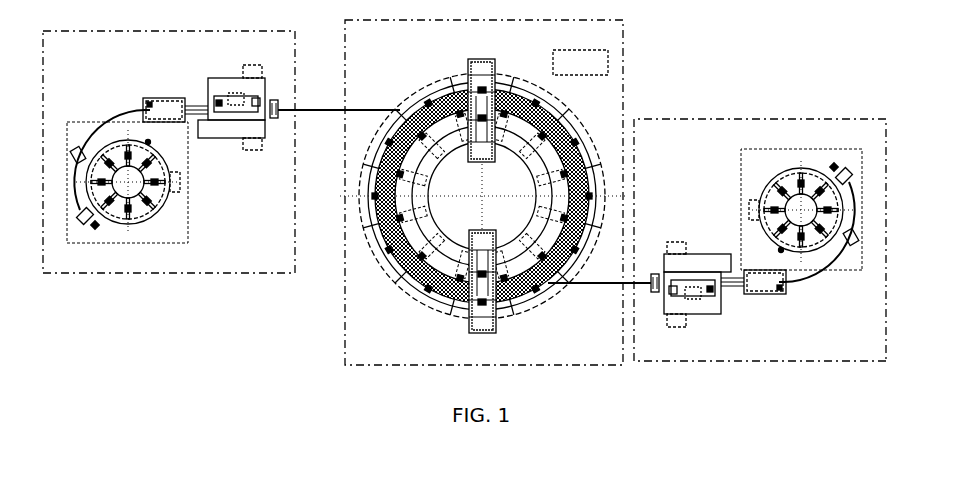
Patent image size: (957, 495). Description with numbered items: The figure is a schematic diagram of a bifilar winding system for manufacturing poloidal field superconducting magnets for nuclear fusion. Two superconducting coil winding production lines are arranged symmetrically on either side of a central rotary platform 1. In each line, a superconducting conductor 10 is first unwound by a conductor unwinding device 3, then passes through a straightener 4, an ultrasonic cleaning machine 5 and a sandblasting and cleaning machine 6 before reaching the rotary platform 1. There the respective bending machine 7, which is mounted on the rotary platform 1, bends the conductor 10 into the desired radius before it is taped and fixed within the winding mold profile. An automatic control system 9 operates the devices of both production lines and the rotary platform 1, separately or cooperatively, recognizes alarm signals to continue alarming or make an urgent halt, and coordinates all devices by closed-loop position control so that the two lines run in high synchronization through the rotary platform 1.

The rotary platform 1 is at (388, 268).
The conductor unwinding device 3 is at (165, 203).
The straightener 4 is at (160, 97).
The ultrasonic cleaning machine 5 is at (203, 101).
The sandblasting and cleaning machine 6 is at (215, 130).
The bending machine 7 is at (455, 73).
The automatic control system 9 is at (585, 63).
The superconducting conductor 10 is at (311, 108).